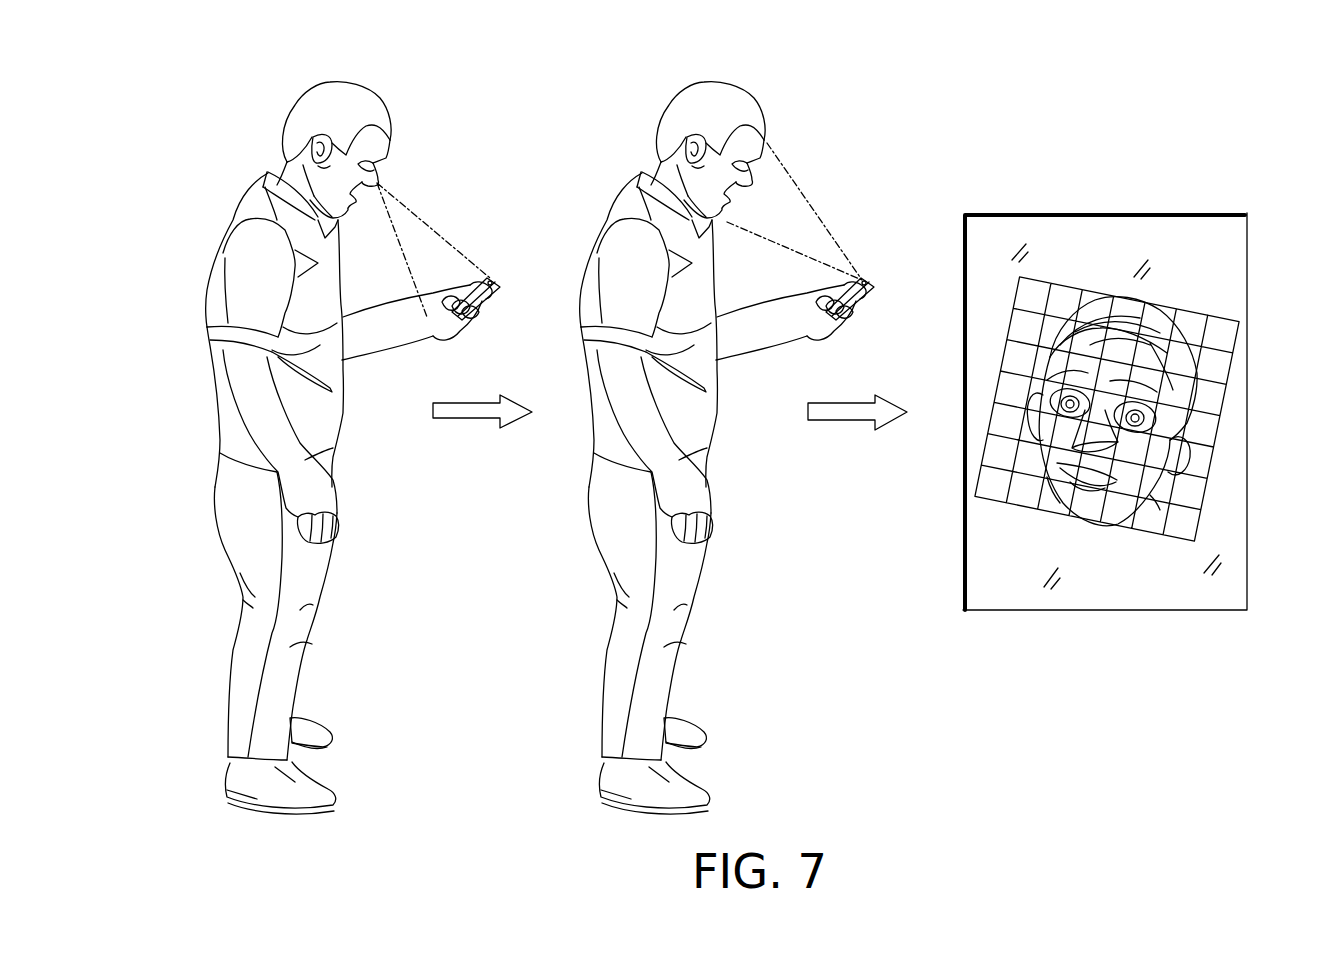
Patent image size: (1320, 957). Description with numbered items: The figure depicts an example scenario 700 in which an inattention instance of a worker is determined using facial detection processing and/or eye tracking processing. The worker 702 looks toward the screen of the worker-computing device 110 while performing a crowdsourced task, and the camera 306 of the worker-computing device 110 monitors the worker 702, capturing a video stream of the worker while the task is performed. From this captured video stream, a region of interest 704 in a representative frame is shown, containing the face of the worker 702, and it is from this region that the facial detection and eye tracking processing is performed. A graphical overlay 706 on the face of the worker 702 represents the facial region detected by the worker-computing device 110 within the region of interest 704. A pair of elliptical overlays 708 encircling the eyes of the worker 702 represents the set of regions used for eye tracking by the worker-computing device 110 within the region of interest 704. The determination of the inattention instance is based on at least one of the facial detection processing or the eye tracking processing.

The example scenario 700 is at (901, 108).
The worker 702 is at (288, 98).
The region of interest 704 is at (1105, 212).
The graphical overlay 706 is at (1193, 310).
The pair of elliptical overlays 708 is at (1070, 392).
The camera 306 is at (487, 277).
The worker-computing device 110 is at (492, 298).